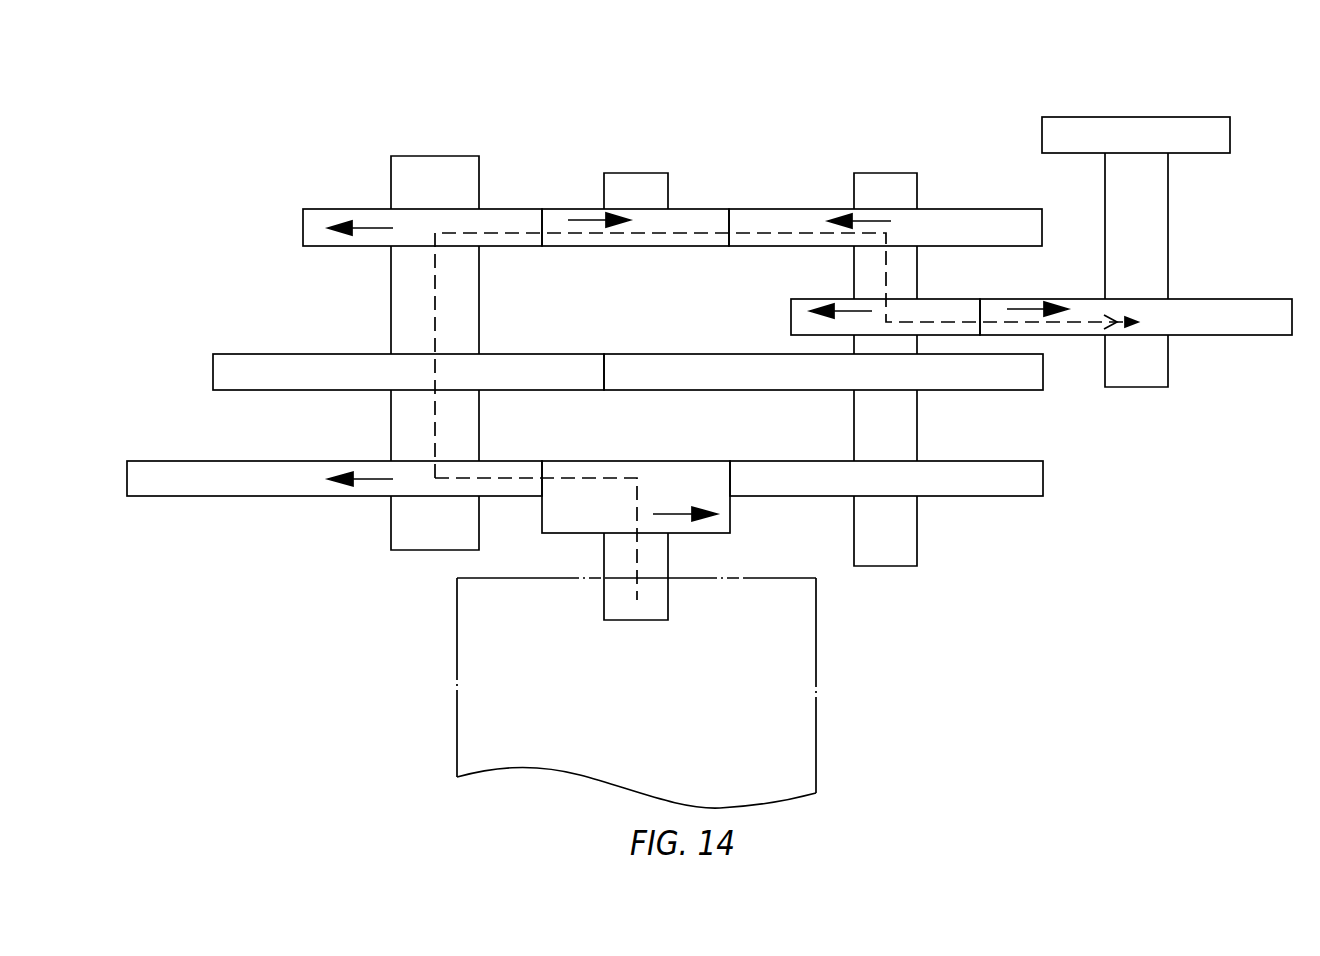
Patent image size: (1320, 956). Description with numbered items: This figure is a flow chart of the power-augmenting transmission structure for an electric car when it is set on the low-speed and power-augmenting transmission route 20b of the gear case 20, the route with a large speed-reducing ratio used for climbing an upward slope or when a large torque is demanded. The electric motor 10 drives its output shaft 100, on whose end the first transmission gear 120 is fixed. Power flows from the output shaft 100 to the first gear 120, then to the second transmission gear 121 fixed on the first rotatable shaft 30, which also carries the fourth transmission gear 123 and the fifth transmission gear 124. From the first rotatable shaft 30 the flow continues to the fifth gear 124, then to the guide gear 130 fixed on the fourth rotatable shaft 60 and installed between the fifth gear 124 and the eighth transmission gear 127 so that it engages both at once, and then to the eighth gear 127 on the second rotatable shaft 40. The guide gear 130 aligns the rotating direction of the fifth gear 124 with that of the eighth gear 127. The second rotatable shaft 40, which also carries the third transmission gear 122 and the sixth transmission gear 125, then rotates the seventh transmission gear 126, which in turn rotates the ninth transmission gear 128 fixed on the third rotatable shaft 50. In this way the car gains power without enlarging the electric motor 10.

The electric motor 10 is at (797, 722).
The gear case 20 is at (1108, 488).
The low-speed and power-augmenting transmission route 20b is at (357, 552).
The first rotatable shaft 30 is at (418, 542).
The second rotatable shaft 40 is at (894, 557).
The third rotatable shaft 50 is at (1138, 370).
The fourth rotatable shaft 60 is at (637, 187).
The output shaft 100 is at (653, 563).
The first transmission gear 120 is at (685, 482).
The second transmission gear 121 is at (238, 487).
The third transmission gear 122 is at (988, 485).
The fourth transmission gear 123 is at (245, 363).
The fifth transmission gear 124 is at (318, 218).
The sixth transmission gear 125 is at (1012, 382).
The seventh transmission gear 126 is at (805, 318).
The eighth transmission gear 127 is at (792, 220).
The ninth transmission gear 128 is at (1225, 327).
The guide gear 130 is at (693, 222).